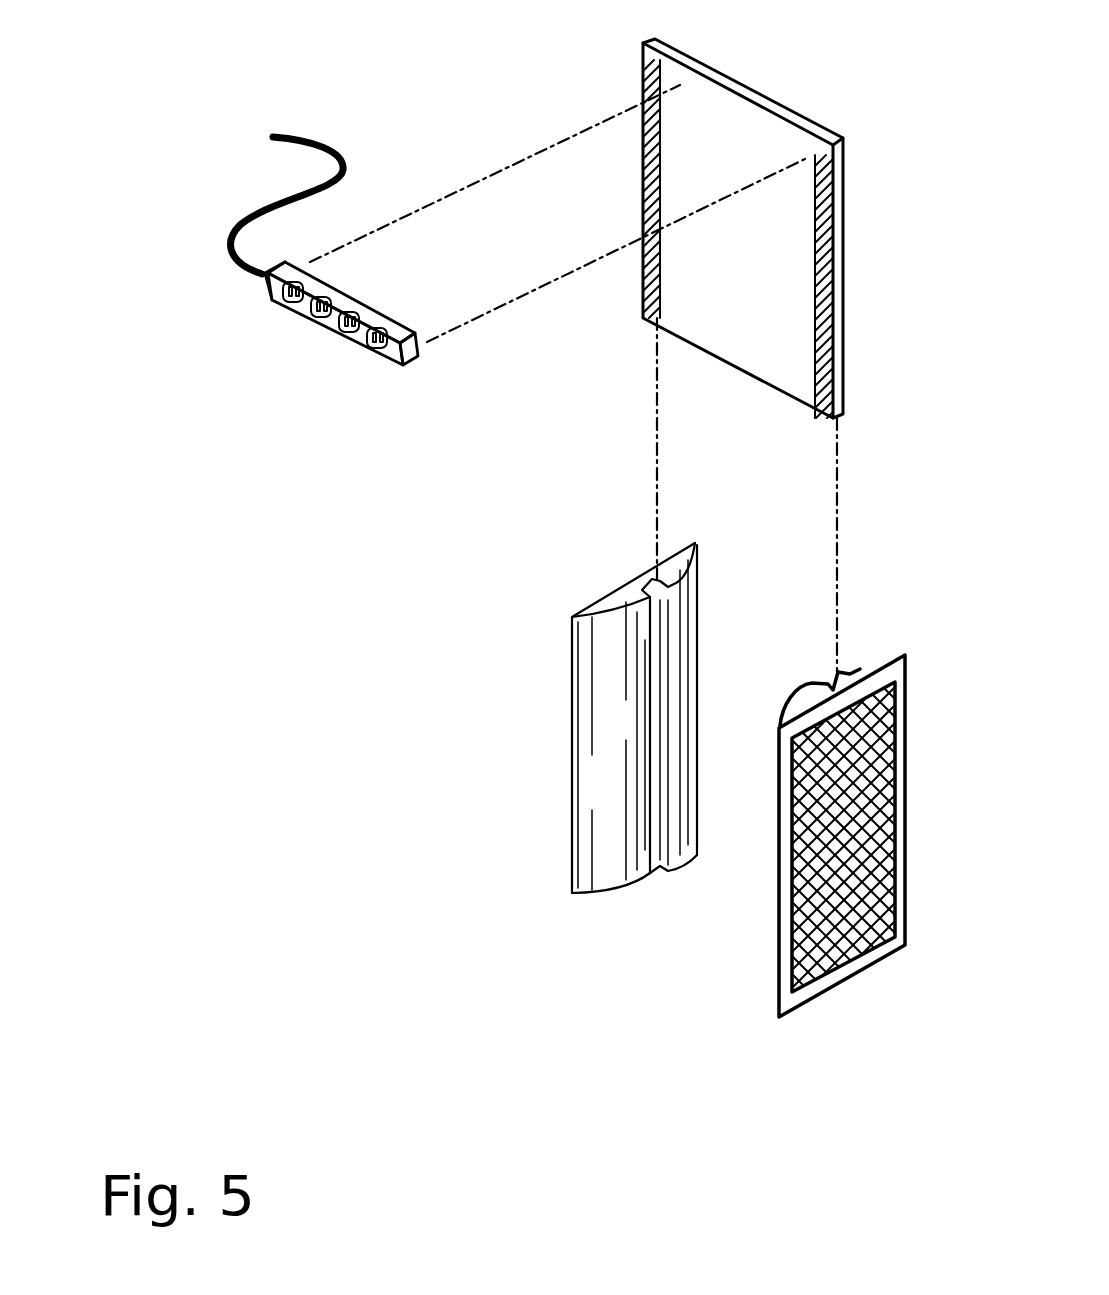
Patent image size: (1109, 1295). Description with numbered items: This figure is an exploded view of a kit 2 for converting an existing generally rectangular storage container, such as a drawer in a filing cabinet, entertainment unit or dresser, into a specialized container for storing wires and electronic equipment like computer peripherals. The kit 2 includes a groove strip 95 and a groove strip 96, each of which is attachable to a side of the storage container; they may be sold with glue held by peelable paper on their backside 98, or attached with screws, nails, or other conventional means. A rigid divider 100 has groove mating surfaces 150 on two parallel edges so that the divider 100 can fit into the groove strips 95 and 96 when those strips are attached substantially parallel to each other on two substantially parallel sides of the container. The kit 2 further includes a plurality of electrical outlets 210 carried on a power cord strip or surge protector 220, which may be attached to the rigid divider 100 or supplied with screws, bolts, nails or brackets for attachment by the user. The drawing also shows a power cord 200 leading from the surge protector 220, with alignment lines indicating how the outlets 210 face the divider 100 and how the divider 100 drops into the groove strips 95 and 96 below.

The kit 2 is at (433, 547).
The groove strip 95 is at (565, 830).
The groove strip 96 is at (775, 940).
The backside 98 is at (866, 918).
The rigid divider 100 is at (768, 92).
The groove mating surfaces 150 is at (822, 292).
The power cord 200 is at (325, 142).
The electrical outlets 210 is at (282, 300).
The surge protector 220 is at (262, 275).